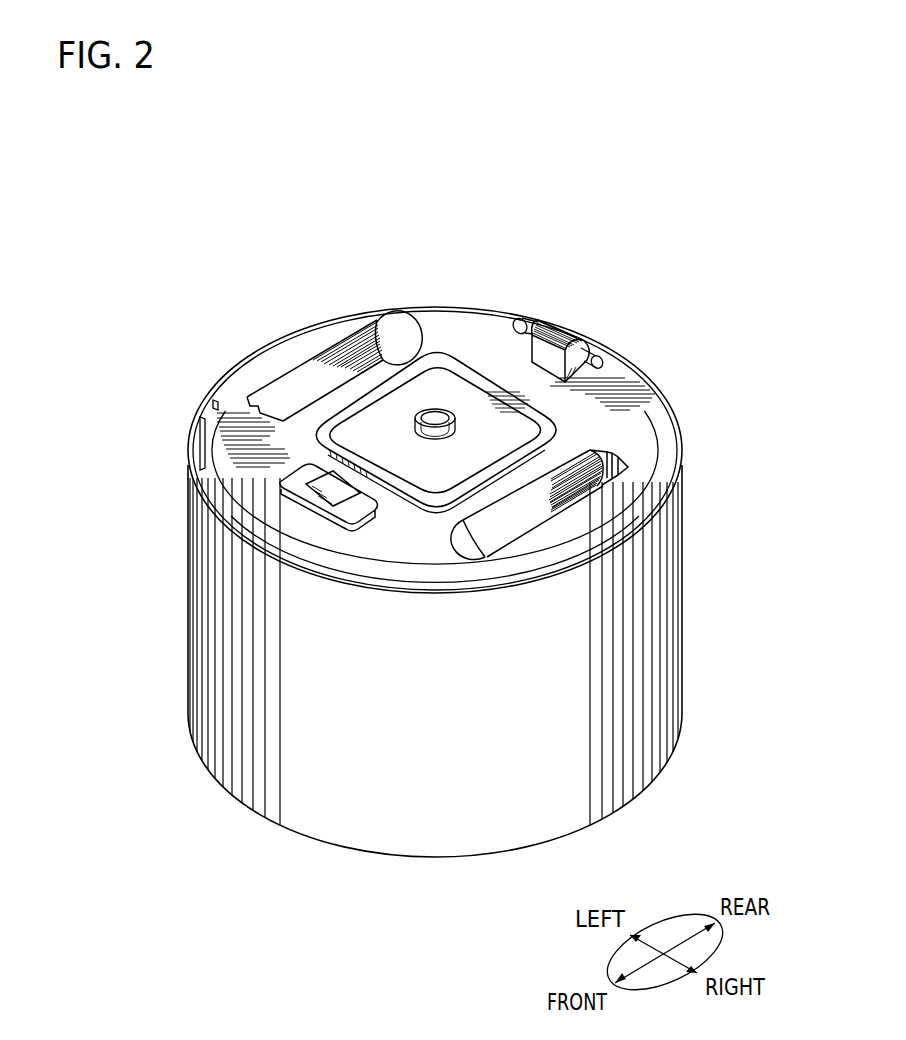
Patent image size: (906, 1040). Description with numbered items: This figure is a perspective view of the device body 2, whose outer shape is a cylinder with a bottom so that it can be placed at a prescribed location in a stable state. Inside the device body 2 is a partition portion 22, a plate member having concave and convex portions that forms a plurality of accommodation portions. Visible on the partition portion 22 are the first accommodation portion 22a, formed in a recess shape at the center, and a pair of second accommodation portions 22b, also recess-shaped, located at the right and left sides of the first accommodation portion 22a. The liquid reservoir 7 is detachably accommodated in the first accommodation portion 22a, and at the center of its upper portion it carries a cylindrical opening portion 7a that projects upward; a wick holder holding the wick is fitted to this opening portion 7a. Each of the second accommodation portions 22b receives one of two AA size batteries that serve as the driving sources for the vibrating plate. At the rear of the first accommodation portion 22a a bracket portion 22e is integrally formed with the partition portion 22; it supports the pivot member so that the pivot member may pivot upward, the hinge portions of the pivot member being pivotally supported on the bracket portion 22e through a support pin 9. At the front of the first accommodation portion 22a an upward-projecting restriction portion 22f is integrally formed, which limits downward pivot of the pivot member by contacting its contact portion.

The device body 2 is at (252, 767).
The partition portion 22 is at (268, 472).
The first accommodation portion 22a is at (563, 427).
The second accommodation portion 22b is at (313, 368).
The bracket portion 22e is at (560, 328).
The restriction portion 22f is at (282, 480).
The liquid reservoir 7 is at (453, 380).
The opening portion 7a is at (462, 427).
The support pin 9 is at (525, 323).